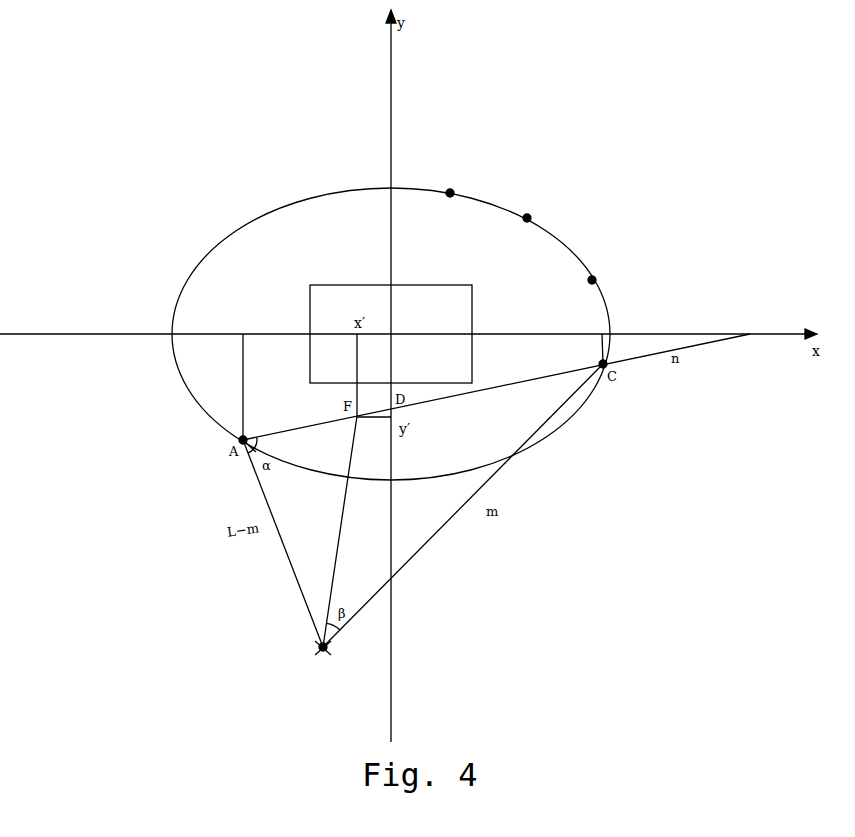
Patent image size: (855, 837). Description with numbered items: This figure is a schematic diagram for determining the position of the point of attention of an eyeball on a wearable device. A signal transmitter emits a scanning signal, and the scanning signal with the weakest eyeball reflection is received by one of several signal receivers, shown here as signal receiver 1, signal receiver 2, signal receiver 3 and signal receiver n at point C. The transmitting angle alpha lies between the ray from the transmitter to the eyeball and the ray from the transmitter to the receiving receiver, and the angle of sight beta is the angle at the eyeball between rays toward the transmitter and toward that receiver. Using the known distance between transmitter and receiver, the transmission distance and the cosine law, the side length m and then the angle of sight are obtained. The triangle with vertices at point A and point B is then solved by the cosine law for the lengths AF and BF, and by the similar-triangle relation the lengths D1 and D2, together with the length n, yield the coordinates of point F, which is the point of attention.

The signal receiver 1 is at (478, 177).
The signal receiver 2 is at (598, 213).
The signal receiver 3 is at (663, 280).
The signal receiver n C is at (660, 385).
The point A is at (154, 439).
The point B is at (329, 649).
The distance D1 is at (257, 387).
The distance D2 is at (588, 349).